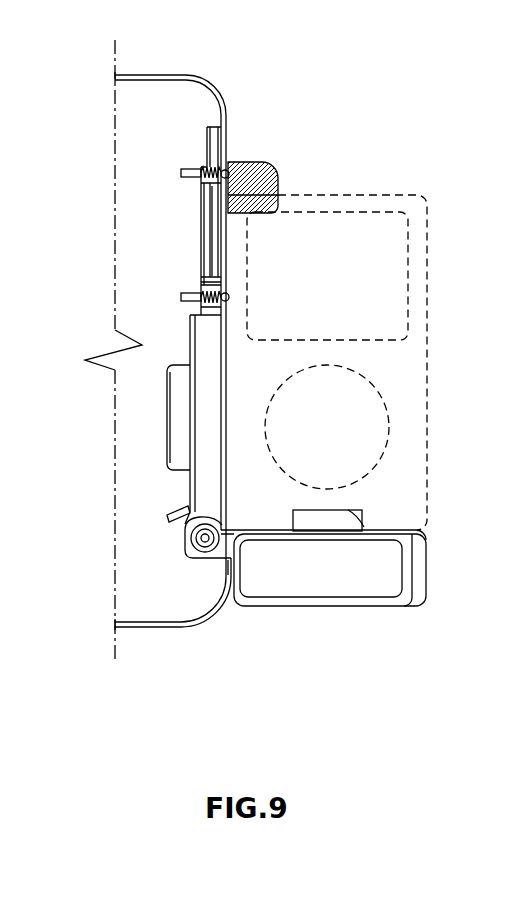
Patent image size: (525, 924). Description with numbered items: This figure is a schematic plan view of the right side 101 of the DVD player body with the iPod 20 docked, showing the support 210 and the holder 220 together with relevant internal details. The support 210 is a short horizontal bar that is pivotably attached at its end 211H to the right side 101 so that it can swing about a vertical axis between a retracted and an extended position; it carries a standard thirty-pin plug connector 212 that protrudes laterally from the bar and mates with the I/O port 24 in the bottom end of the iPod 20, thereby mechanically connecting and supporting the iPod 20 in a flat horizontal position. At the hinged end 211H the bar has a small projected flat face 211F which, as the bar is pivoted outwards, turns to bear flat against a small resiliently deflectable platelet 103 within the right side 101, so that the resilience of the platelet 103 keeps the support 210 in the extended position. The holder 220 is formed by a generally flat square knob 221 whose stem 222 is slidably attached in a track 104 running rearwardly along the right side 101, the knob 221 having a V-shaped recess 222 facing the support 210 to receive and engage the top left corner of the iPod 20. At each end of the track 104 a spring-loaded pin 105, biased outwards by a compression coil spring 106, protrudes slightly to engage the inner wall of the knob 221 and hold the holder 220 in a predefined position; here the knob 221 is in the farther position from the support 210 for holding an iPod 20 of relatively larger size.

The right side 101 is at (214, 88).
The platelet 103 is at (167, 517).
The track 104 is at (218, 252).
The spring-loaded pin 105 is at (181, 173).
The compression coil spring 106 is at (203, 166).
The stem 222 is at (215, 188).
The projected flat face 211F is at (183, 521).
The end 211H is at (216, 557).
The holder 220 is at (273, 171).
The knob 221 is at (279, 178).
The iPod 20 is at (423, 197).
The plug connector 212 is at (334, 510).
The I/O port 24 is at (349, 511).
The support 210 is at (355, 607).